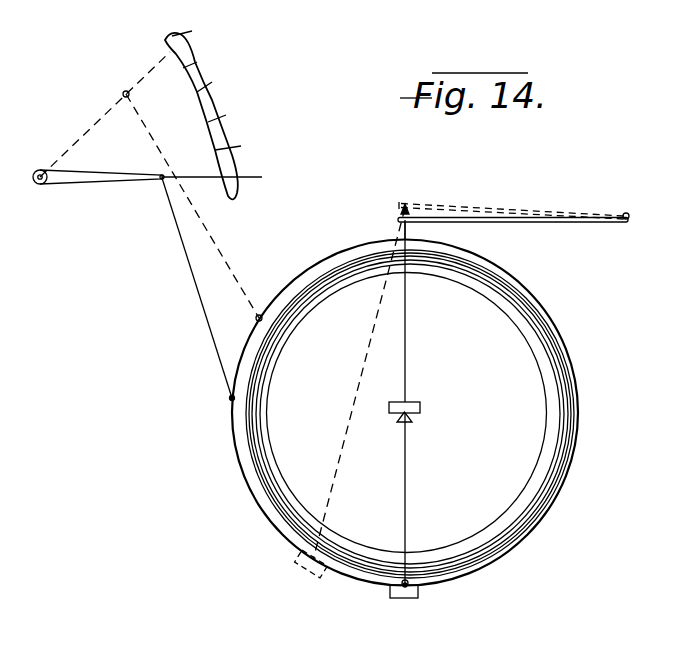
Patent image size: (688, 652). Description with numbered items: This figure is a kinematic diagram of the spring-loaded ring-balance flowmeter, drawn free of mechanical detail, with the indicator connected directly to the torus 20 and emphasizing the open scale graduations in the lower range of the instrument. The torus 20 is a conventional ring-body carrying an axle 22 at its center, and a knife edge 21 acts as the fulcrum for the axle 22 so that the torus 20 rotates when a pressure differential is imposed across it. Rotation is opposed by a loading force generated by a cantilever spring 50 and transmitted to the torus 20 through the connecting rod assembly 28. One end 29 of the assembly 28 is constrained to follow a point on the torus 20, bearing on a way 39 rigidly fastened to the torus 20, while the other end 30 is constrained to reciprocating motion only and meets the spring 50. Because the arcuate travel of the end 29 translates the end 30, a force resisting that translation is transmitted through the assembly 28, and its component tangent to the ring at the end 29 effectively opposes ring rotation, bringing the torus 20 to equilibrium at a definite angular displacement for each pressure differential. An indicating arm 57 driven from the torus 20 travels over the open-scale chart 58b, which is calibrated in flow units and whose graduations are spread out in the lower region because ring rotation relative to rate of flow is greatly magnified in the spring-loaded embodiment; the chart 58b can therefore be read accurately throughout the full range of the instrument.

The torus 20 is at (572, 428).
The knife edge 21 is at (412, 418).
The axle 22 is at (421, 407).
The connecting rod assembly 28 is at (358, 377).
The end of connecting rod assembly 29 is at (407, 572).
The other end of connecting rod assembly 30 is at (407, 228).
The way 39 is at (418, 596).
The cantilever spring 50 is at (476, 206).
The indicating arm 57 is at (73, 142).
The open-scale chart 58b is at (238, 184).